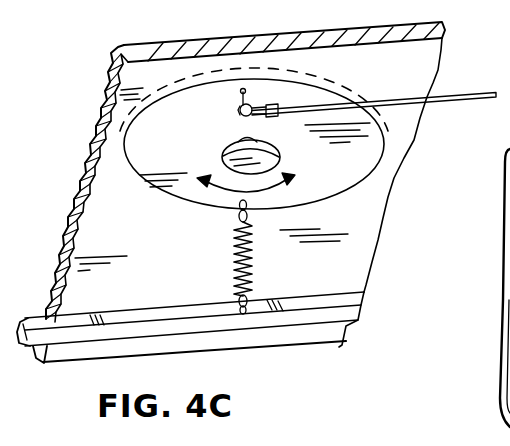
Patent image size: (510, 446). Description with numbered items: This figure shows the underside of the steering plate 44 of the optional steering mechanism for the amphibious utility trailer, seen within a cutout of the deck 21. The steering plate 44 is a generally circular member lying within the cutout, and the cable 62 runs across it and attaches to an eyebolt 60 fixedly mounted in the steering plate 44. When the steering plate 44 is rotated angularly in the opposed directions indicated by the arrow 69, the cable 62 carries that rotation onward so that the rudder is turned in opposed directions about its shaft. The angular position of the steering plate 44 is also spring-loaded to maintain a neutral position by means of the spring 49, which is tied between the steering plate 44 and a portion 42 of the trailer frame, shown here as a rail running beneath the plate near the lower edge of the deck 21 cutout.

The deck 21 is at (100, 165).
The portion of the trailer frame 42 is at (184, 310).
The steering plate 44 is at (170, 157).
The spring 49 is at (251, 262).
The eyebolt 60 is at (238, 108).
The cable 62 is at (407, 98).
The arrow 69 is at (240, 190).